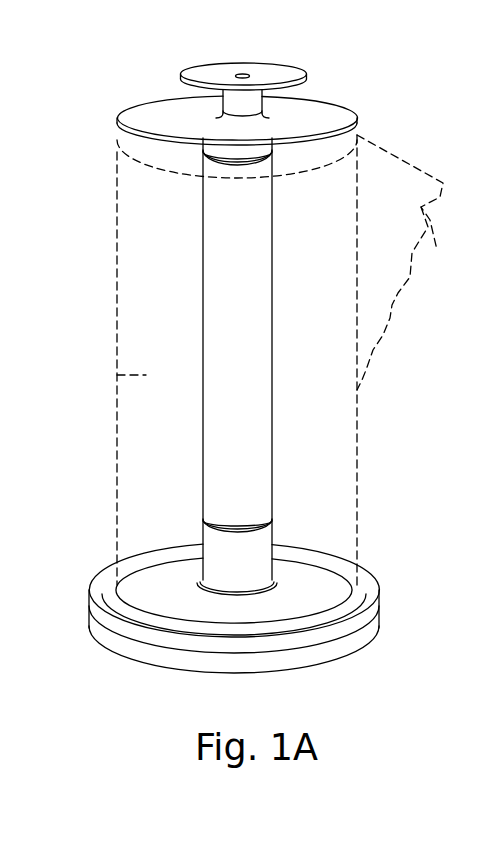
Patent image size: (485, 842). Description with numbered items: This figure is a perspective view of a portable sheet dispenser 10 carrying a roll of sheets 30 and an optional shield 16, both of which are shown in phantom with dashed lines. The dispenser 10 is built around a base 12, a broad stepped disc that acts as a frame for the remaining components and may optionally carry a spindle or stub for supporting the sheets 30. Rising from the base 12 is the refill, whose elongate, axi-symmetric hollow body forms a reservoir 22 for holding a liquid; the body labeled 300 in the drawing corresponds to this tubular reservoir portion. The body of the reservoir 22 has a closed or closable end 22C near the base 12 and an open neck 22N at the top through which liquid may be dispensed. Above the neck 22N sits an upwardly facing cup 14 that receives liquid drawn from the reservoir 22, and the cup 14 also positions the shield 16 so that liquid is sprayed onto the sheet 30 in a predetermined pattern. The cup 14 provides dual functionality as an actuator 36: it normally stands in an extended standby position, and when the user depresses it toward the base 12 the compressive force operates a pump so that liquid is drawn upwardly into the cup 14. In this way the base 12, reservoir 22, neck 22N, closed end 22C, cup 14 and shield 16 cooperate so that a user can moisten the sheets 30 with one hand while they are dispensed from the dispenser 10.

The dispenser 10 is at (392, 492).
The base 12 is at (370, 600).
The cup 14 is at (207, 73).
The shield 16 is at (163, 103).
The reservoir 22 is at (171, 366).
The neck 22N is at (203, 157).
The closed end 22C is at (215, 527).
The sheet 30 is at (114, 375).
The actuator 36 is at (330, 76).
The tube body 300 is at (203, 287).